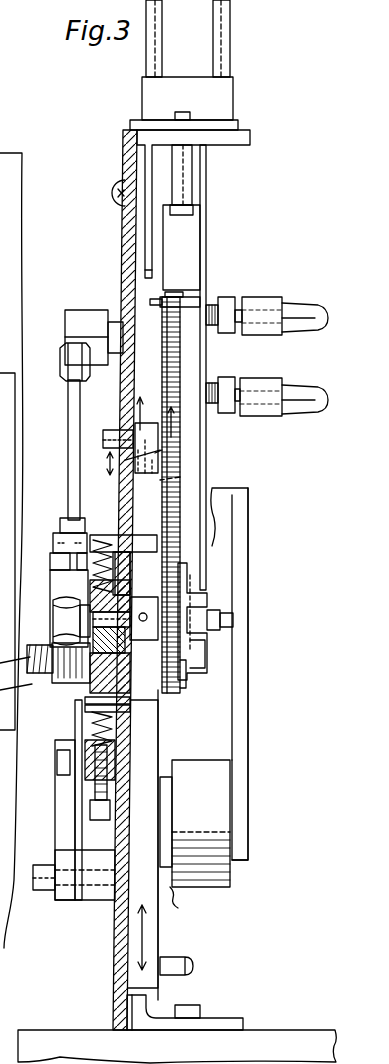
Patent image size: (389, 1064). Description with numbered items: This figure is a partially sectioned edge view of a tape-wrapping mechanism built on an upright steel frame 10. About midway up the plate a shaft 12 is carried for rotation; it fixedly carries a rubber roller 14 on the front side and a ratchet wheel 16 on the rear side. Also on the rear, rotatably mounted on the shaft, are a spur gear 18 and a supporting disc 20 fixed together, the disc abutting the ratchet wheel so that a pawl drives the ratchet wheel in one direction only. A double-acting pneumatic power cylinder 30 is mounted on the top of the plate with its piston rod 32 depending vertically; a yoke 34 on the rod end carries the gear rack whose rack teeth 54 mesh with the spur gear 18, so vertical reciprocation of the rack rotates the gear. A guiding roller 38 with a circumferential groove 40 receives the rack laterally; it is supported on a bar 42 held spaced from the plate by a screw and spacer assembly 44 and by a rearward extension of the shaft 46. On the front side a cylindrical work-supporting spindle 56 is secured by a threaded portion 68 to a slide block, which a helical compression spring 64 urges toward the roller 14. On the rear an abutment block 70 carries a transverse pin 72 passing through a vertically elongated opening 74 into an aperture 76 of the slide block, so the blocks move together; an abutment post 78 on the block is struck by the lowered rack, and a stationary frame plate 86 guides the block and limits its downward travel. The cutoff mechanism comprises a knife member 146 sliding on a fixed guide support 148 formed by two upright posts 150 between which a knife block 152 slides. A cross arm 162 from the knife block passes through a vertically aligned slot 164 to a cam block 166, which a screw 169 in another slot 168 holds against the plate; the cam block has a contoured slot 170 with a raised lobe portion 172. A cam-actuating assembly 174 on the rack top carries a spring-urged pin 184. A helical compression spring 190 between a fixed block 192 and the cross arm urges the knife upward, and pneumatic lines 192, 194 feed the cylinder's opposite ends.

The frame 10 is at (108, 986).
The shaft 12 is at (133, 640).
The rubber roller 14 is at (60, 605).
The ratchet wheel 16 is at (200, 592).
The spur gear 18 is at (205, 645).
The supporting disc 20 is at (180, 672).
The pneumatic power cylinder 30 is at (234, 50).
The piston rod 32 is at (195, 172).
The yoke 34 is at (190, 237).
The guiding roller 38 is at (230, 875).
The circumferential groove 40 is at (165, 883).
The bar 42 is at (248, 722).
The screw and spacer assembly 44 is at (222, 488).
The rearward extension of the shaft 46 is at (233, 622).
The rack teeth 54 is at (182, 348).
The work-supporting spindle 56 is at (63, 680).
The helical compression spring 64 is at (88, 772).
The threaded portion 68 is at (78, 710).
The abutment block 70 is at (158, 935).
The transverse pin 72 is at (130, 704).
The vertically elongated opening 74 is at (125, 713).
The aperture 76 is at (88, 744).
The abutment post 78 is at (190, 972).
The stationary frame plate 86 is at (230, 1020).
The knife member 146 is at (65, 584).
The fixed guide support 148 is at (52, 566).
The upright posts 150 is at (98, 500).
The knife block 152 is at (68, 497).
The cross arm 162 is at (135, 540).
The vertically aligned slot 164 is at (125, 567).
The cam block 166 is at (160, 450).
The vertically aligned slot 168 is at (160, 451).
The screw 169 is at (108, 429).
The vertically aligned slot 170 is at (180, 477).
The raised lobe portion 172 is at (150, 437).
The cam-actuating assembly 174 is at (175, 292).
The pin 184 is at (150, 300).
The helical compression spring 190 is at (108, 540).
The pneumatic line 192 is at (306, 386).
The pneumatic line 194 is at (306, 300).